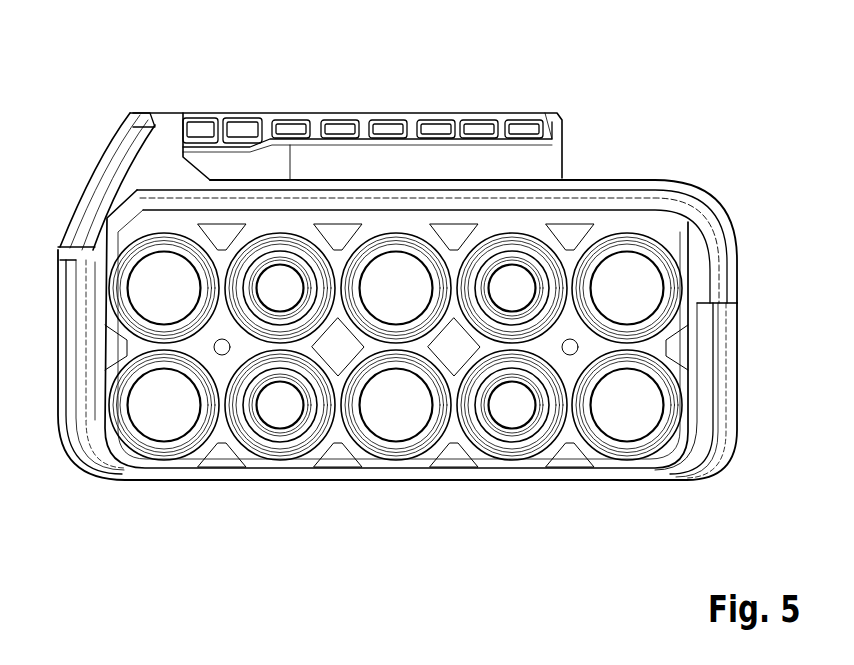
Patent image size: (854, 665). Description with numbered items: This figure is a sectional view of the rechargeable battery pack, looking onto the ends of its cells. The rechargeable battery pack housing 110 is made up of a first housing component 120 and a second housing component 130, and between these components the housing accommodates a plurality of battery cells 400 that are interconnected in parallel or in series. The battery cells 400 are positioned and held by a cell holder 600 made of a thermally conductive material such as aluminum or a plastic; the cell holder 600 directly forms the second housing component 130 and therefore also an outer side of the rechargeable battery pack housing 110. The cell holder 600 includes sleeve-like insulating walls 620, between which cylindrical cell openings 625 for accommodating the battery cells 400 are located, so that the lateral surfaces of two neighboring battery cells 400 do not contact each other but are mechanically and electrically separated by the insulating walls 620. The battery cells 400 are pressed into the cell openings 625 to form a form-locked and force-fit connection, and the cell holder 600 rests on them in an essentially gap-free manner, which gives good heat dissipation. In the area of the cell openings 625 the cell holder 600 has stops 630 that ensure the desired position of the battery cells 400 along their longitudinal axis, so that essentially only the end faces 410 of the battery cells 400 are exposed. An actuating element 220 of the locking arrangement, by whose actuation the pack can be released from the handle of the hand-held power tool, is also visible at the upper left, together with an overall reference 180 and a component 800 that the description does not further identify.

The rechargeable battery pack housing 110 is at (738, 125).
The first housing component 120 is at (723, 222).
The second housing component 130 is at (713, 387).
The battery pack 180 is at (310, 92).
The actuating element 220 is at (95, 195).
The battery cell 400 is at (143, 290).
The end face 410 is at (515, 285).
The cell holder 600 is at (404, 478).
The sleeve-like insulating wall 620 is at (343, 407).
The cylindrical cell opening 625 is at (268, 456).
The stop 630 is at (166, 442).
The connector cover 800 is at (397, 167).